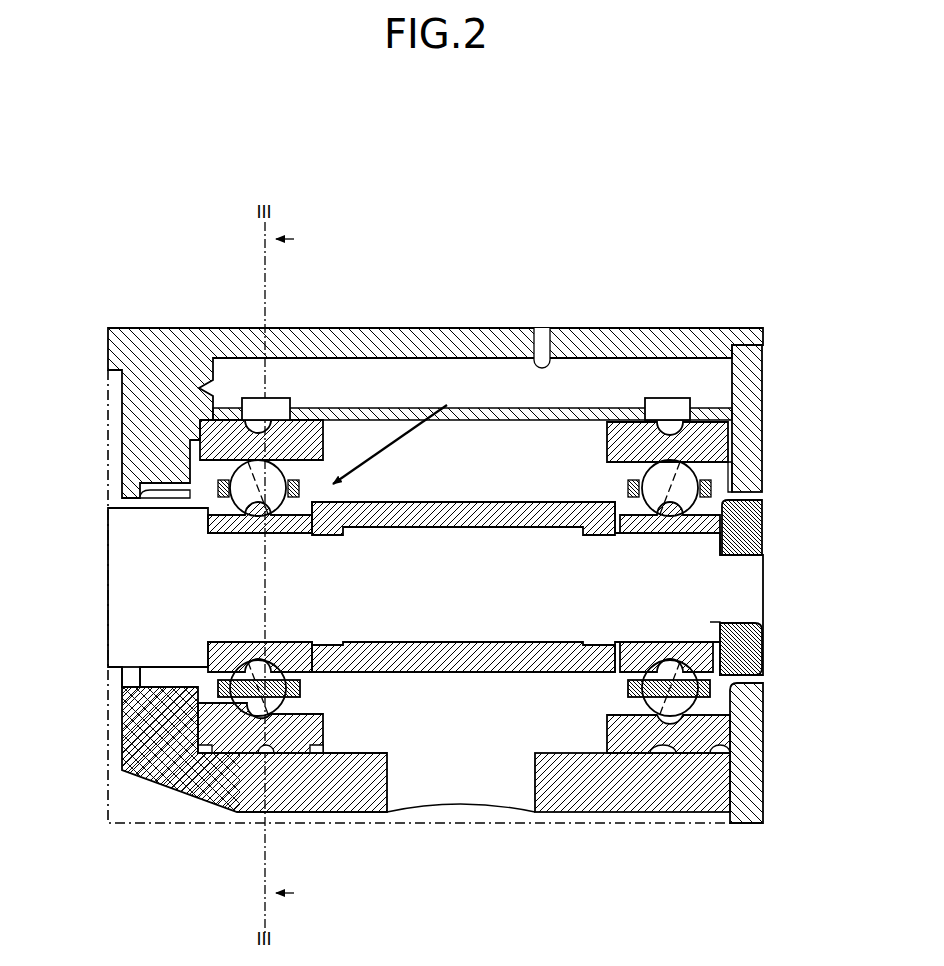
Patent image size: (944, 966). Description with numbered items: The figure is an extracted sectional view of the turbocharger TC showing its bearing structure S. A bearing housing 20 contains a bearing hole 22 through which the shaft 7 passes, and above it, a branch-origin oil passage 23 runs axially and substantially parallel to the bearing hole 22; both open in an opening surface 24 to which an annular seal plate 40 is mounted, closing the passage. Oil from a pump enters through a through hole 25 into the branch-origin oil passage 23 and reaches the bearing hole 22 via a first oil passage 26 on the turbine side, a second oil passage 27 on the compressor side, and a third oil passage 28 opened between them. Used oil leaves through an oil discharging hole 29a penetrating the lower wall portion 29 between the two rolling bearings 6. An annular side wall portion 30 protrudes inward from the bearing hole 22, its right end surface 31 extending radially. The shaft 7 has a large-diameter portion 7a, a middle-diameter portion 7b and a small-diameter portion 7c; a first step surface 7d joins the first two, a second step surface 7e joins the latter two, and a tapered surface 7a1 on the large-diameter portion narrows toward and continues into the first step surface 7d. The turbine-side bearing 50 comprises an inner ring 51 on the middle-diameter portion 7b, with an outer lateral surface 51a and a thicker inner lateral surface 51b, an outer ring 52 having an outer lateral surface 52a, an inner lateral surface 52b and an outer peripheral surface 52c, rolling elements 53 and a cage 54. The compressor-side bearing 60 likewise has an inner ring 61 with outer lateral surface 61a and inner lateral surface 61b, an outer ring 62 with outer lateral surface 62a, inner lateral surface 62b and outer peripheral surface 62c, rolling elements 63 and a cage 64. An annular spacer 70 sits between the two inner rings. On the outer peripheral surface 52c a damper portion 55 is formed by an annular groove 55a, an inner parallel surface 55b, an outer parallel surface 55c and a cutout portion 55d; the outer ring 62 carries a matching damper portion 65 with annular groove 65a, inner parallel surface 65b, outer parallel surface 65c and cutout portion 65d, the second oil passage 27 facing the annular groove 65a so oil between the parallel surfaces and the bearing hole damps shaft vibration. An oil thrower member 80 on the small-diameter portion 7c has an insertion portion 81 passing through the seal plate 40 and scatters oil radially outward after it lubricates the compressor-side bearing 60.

The turbocharger TC is at (82, 159).
The bearing structure S is at (116, 224).
The rolling bearings 6 is at (338, 707).
The shaft 7 is at (435, 607).
The large-diameter portion 7a is at (147, 596).
The tapered surface 7a1 is at (212, 675).
The middle-diameter portion 7b is at (502, 596).
The small-diameter portion 7c is at (727, 601).
The first step surface 7d is at (212, 535).
The second step surface 7e is at (722, 543).
The bearing housing 20 is at (165, 790).
The bearing hole 22 is at (449, 469).
The branch-origin oil passage 23 is at (395, 395).
The opening surface 24 is at (733, 417).
The through hole 25 is at (541, 345).
The first oil passage 26 is at (270, 400).
The second oil passage 27 is at (722, 405).
The third oil passage 28 is at (447, 405).
The lower wall portion 29 is at (696, 825).
The oil discharging hole 29a is at (441, 791).
The side wall portion 30 is at (150, 492).
The right end surface 31 is at (140, 500).
The seal plate 40 is at (762, 432).
The turbine-side bearing 50 is at (220, 664).
The inner ring 51 is at (228, 627).
The outer lateral surface 51a is at (208, 650).
The inner lateral surface 51b is at (228, 608).
The outer ring 52 is at (258, 792).
The outer lateral surface 52a is at (165, 745).
The inner lateral surface 52b is at (387, 748).
The outer peripheral surface 52c is at (310, 745).
The rolling elements 53 is at (197, 727).
The cage 54 is at (173, 733).
The damper portion 55 is at (265, 359).
The annular groove 55a is at (246, 418).
The inner parallel surface 55b is at (318, 424).
The outer parallel surface 55c is at (210, 424).
The cutout portion 55d is at (203, 436).
The compressor-side bearing 60 is at (682, 667).
The inner ring 61 is at (663, 642).
The outer lateral surface 61a is at (725, 648).
The inner lateral surface 61b is at (607, 640).
The outer ring 62 is at (690, 770).
The outer lateral surface 62a is at (765, 760).
The inner lateral surface 62b is at (640, 760).
The outer peripheral surface 62c is at (748, 800).
The rolling elements 63 is at (763, 740).
The cage 64 is at (765, 772).
The damper portion 65 is at (725, 360).
The annular groove 65a is at (688, 420).
The inner parallel surface 65b is at (641, 420).
The outer parallel surface 65c is at (700, 412).
The cutout portion 65d is at (733, 416).
The spacer 70 is at (492, 810).
The oil thrower member 80 is at (762, 508).
The insertion portion 81 is at (756, 490).